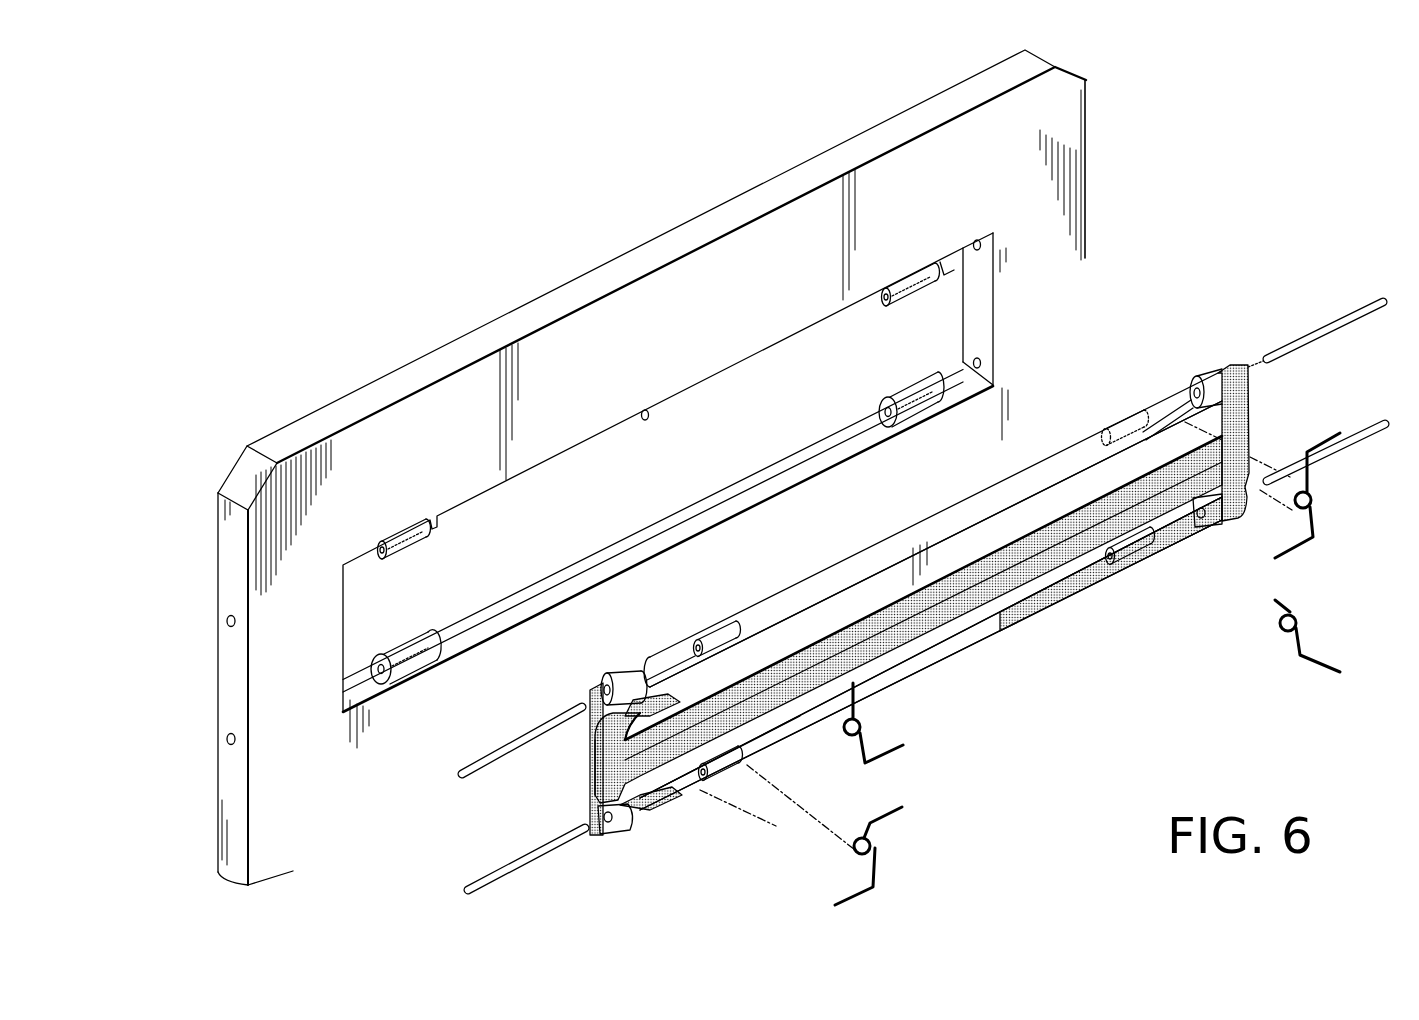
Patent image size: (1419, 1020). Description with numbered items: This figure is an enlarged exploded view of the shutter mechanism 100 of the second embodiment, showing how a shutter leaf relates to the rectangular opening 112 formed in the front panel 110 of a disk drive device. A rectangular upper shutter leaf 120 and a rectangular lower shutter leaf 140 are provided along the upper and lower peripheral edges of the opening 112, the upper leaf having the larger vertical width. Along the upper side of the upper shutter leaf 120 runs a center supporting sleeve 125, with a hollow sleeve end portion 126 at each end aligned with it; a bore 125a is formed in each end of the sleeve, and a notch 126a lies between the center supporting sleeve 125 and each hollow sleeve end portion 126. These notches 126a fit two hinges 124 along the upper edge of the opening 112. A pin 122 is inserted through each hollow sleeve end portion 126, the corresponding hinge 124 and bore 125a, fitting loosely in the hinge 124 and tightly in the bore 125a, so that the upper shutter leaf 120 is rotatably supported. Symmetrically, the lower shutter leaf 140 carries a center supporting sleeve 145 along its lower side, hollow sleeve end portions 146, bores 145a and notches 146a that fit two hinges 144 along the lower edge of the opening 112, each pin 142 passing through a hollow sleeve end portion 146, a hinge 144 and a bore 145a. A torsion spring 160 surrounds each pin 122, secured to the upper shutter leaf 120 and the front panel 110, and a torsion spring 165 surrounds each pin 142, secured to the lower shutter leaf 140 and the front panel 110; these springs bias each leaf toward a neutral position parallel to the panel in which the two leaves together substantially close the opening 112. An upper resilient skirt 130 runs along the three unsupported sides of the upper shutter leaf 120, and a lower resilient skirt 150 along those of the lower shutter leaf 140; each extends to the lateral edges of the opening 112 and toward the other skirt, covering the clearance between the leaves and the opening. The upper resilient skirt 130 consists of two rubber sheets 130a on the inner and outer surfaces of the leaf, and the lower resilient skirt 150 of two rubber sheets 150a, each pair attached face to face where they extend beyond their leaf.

The shutter mechanism 100 is at (1148, 238).
The front panel 110 is at (685, 290).
The opening 112 is at (645, 410).
The upper shutter leaf 120 is at (942, 556).
The pin 122 is at (492, 748).
The hinge 124 is at (906, 288).
The center supporting sleeve 125 is at (905, 533).
The bore 125a is at (742, 606).
The hollow sleeve end portion 126 is at (620, 670).
The notch 126a is at (667, 673).
The upper resilient skirt 130 is at (880, 600).
The rubber sheet 130a is at (592, 778).
The lower shutter leaf 140 is at (990, 617).
The pin 142 is at (492, 878).
The hinge 144 is at (900, 396).
The center supporting sleeve 145 is at (1055, 600).
The bore 145a is at (745, 770).
The hollow sleeve end portion 146 is at (635, 822).
The notch 146a is at (685, 783).
The lower resilient skirt 150 is at (900, 660).
The rubber sheet 150a is at (622, 835).
The torsion spring 160 is at (898, 750).
The torsion spring 165 is at (868, 892).